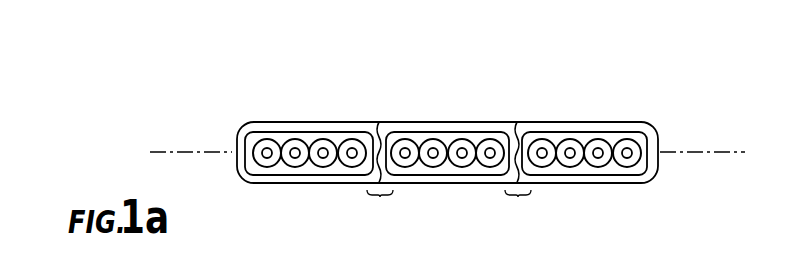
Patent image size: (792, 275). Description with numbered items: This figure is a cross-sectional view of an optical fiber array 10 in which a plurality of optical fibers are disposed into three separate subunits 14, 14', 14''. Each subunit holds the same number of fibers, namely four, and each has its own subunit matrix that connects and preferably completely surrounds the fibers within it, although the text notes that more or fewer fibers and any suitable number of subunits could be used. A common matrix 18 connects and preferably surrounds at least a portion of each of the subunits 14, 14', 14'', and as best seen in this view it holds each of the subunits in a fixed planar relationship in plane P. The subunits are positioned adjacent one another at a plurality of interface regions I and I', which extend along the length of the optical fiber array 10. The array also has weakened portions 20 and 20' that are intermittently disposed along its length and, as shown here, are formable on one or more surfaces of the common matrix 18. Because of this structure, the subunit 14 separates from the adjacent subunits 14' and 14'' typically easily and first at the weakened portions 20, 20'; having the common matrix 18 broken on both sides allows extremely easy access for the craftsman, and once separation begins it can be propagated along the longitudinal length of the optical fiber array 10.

The optical fiber array 10 is at (436, 124).
The subunit 14 is at (464, 104).
The subunit 14' is at (671, 103).
The subunit 14'' is at (192, 132).
The common matrix 18 is at (648, 179).
The weakened portion 20 is at (569, 109).
The weakened portion 20' is at (315, 140).
The plane P is at (446, 151).
The interface region I is at (518, 208).
The interface region I' is at (380, 208).